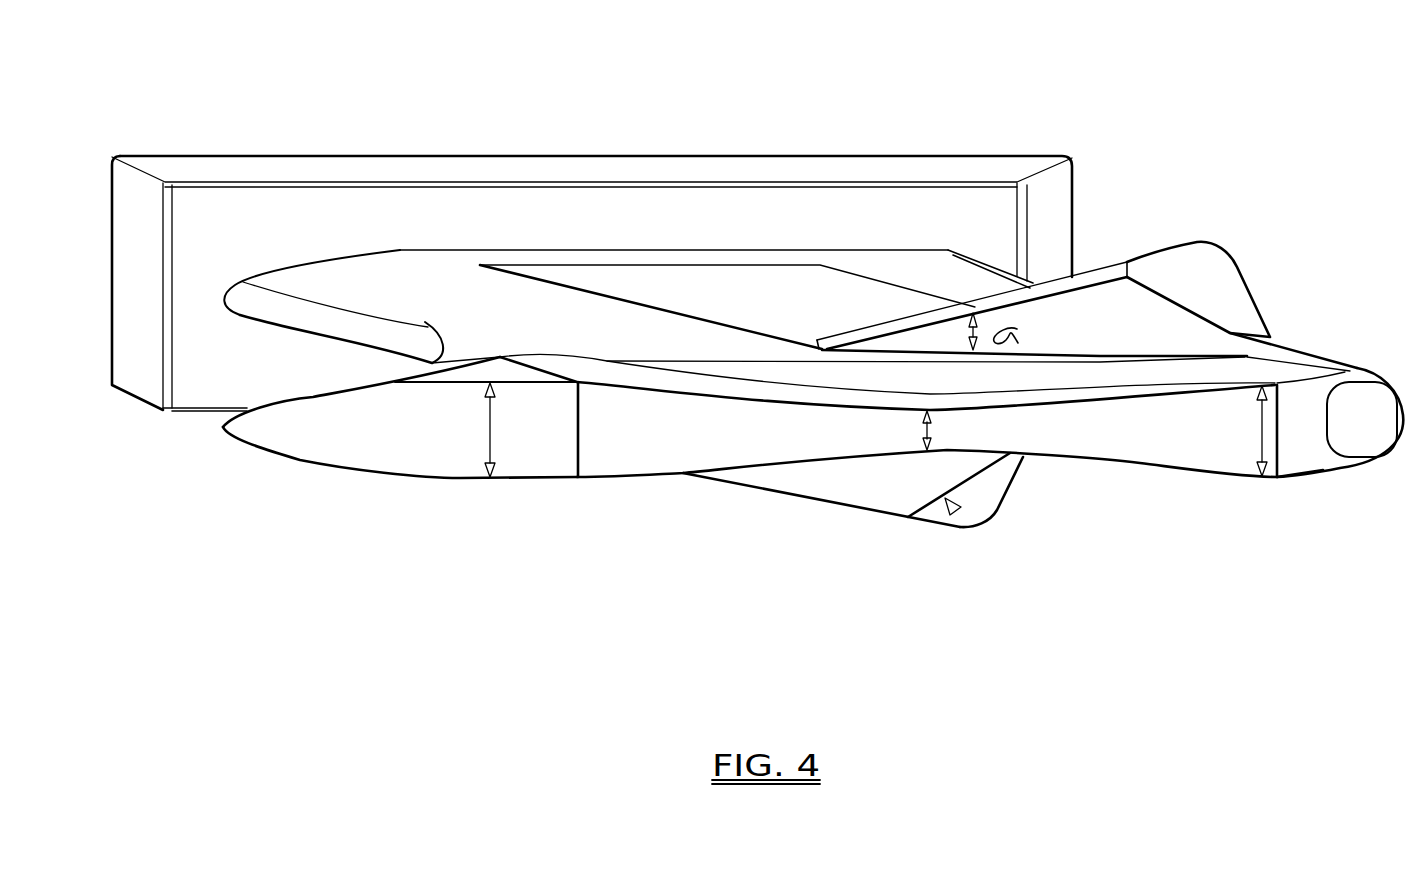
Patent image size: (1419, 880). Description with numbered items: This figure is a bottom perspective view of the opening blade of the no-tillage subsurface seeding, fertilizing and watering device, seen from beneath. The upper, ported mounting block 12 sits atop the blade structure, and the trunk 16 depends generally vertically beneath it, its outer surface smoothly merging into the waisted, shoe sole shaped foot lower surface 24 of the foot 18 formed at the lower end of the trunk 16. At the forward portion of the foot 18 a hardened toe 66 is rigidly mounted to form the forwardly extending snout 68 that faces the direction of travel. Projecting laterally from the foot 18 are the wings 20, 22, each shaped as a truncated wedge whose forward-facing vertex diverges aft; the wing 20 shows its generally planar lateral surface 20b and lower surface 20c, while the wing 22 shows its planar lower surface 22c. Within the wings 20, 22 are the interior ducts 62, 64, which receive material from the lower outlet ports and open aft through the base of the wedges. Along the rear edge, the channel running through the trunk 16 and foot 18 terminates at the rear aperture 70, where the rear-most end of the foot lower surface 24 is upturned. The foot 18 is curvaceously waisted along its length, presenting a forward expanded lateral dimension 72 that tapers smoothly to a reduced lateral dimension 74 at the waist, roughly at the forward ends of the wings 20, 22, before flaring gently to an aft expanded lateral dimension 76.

The mounting block 12 is at (1018, 165).
The trunk 16 is at (267, 343).
The foot structure 18 is at (1345, 187).
The wing 20 is at (1237, 268).
The lateral surface 20b is at (1103, 268).
The lower surface 20c is at (1130, 341).
The wing 22 is at (980, 530).
The lower surface 22c is at (920, 500).
The foot lower surface 24 is at (550, 452).
The interior duct 62 is at (955, 513).
The interior duct 64 is at (1195, 285).
The toe 66 is at (290, 460).
The snout 68 is at (223, 432).
The rear aperture 70 is at (1375, 418).
The forward expanded lateral dimension 72 is at (488, 430).
The reduced lateral dimension 74 is at (925, 433).
The aft expanded lateral dimension 76 is at (1258, 432).